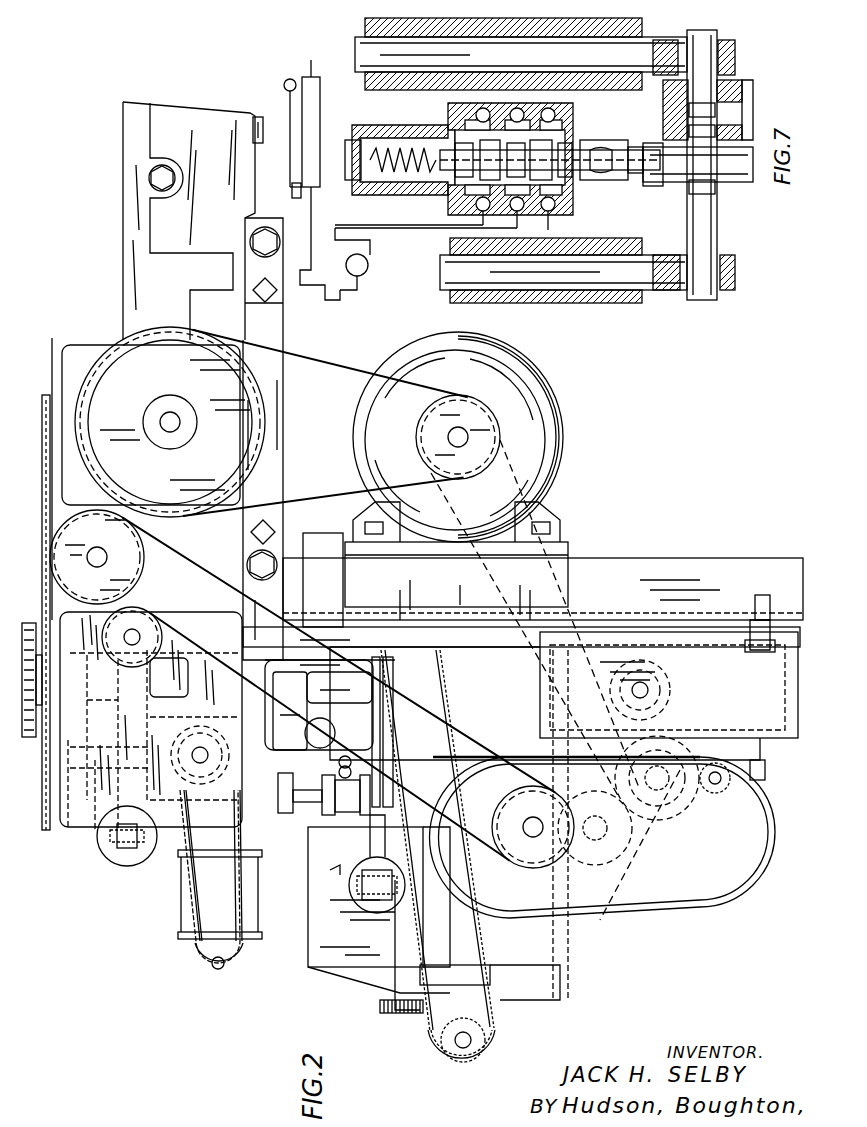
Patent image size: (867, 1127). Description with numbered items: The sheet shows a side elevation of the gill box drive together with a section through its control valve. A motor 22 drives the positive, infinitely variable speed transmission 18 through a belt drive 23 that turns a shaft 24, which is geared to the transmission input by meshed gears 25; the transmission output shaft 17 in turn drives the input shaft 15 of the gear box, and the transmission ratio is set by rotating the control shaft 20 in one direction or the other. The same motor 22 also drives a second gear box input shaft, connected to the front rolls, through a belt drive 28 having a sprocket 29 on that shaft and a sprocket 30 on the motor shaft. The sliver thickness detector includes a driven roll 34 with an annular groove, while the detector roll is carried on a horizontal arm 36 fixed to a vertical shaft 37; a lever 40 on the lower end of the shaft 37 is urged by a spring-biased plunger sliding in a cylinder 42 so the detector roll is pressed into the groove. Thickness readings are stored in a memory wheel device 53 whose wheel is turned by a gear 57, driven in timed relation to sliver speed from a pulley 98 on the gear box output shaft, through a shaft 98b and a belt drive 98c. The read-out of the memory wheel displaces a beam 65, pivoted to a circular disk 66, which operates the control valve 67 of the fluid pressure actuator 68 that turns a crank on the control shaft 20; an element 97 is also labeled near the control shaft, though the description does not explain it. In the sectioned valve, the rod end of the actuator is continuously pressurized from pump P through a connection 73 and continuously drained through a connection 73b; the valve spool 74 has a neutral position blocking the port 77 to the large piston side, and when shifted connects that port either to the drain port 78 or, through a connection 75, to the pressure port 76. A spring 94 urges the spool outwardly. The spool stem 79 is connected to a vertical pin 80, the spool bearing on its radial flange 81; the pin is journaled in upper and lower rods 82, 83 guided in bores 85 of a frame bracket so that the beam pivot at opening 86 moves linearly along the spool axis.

In FIG. 2, the input shaft 15 is at (92, 548).
In FIG. 2, the output shaft 17 is at (527, 838).
In FIG. 2, the variable speed transmission 18 is at (632, 895).
In FIG. 2, the control shaft 20 is at (352, 848).
In FIG. 2, the motor 22 is at (565, 430).
In FIG. 2, the belt drive 23 is at (575, 535).
In FIG. 2, the shaft 24 is at (665, 820).
In FIG. 2, the meshed gears 25 is at (620, 840).
In FIG. 2, the belt drive 28 is at (335, 378).
In FIG. 2, the sprocket 29 is at (140, 368).
In FIG. 2, the sprocket 30 is at (428, 432).
In FIG. 2, the roll 34 is at (28, 621).
In FIG. 2, the horizontal arm 36 is at (75, 810).
In FIG. 2, the vertical shaft 37 is at (98, 815).
In FIG. 2, the lever 40 is at (130, 722).
In FIG. 2, the cylinder 42 is at (136, 858).
In FIG. 2, the memory wheel device 53 is at (320, 935).
In FIG. 2, the gear 57 is at (390, 1014).
In FIG. 7, the beam 65 is at (758, 92).
In FIG. 2, the circular disk 66 is at (347, 773).
In FIG. 7, the control valve 67 is at (445, 207).
In FIG. 7, the fluid pressure actuator 68 is at (335, 251).
In FIG. 7, the connection 73 is at (321, 80).
In FIG. 7, the connection 73b is at (290, 78).
In FIG. 7, the valve spool 74 is at (565, 142).
In FIG. 7, the connection 75 is at (292, 182).
In FIG. 7, the pressure port 76 is at (471, 210).
In FIG. 7, the port 77 is at (505, 211).
In FIG. 7, the drain port 78 is at (562, 225).
In FIG. 7, the stem 79 is at (612, 142).
In FIG. 7, the pin 80 is at (720, 212).
In FIG. 2, the pin 80 is at (312, 802).
In FIG. 7, the radial flange 81 is at (756, 170).
In FIG. 7, the upper rod 82 is at (452, 262).
In FIG. 2, the upper rod 82 is at (286, 815).
In FIG. 7, the lower rod 83 is at (362, 50).
In FIG. 7, the guide bores 85 is at (450, 75).
In FIG. 7, the opening 86 is at (670, 95).
In FIG. 7, the spring 94 is at (392, 126).
In FIG. 2, the coupling 97 is at (329, 863).
In FIG. 2, the pulley 98 is at (268, 780).
In FIG. 2, the shaft 98b is at (462, 1048).
In FIG. 2, the belt drive 98c is at (423, 898).